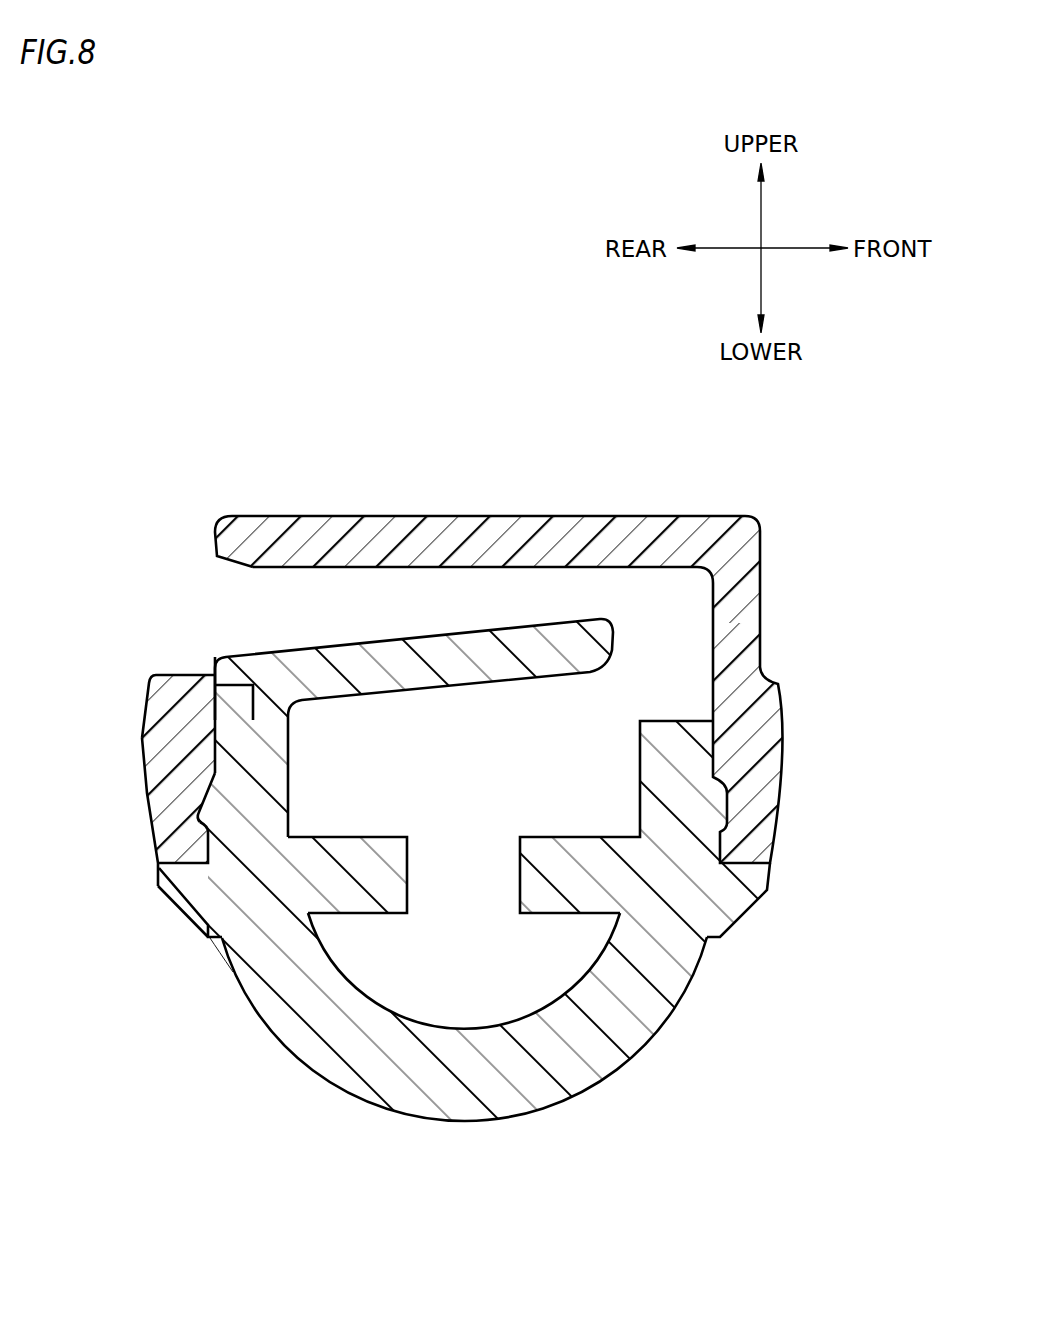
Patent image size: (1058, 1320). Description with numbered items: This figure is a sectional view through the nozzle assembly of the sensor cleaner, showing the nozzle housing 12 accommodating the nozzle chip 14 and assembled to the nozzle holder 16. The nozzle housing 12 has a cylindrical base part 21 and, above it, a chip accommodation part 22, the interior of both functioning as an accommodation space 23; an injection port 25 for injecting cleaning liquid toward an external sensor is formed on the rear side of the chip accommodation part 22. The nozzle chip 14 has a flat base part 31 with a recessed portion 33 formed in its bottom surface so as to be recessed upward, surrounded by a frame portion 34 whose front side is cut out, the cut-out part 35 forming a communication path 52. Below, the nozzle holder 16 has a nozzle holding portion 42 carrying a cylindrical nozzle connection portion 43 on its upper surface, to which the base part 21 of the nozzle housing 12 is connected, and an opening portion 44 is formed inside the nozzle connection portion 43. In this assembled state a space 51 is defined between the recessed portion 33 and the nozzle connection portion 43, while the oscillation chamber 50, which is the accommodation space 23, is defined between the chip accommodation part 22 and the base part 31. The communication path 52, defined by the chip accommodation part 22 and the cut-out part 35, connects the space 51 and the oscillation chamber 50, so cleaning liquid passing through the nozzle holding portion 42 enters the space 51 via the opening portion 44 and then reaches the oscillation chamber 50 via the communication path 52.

The nozzle housing 12 is at (603, 512).
The nozzle chip 14 is at (476, 597).
The nozzle holder 16 is at (310, 1088).
The base part 21 is at (173, 725).
The chip accommodation part 22 is at (415, 517).
The accommodation space 23 is at (500, 817).
The injection port 25 is at (257, 612).
The base part 31 is at (533, 610).
The recessed portion 33 is at (500, 682).
The frame portion 34 is at (210, 702).
The cut-out part 35 is at (617, 627).
The nozzle holding portion 42 is at (517, 1077).
The nozzle connection portion 43 is at (250, 747).
The opening portion 44 is at (467, 873).
The oscillation chamber 50 is at (499, 682).
The space 51 is at (350, 783).
The communication path 52 is at (658, 660).